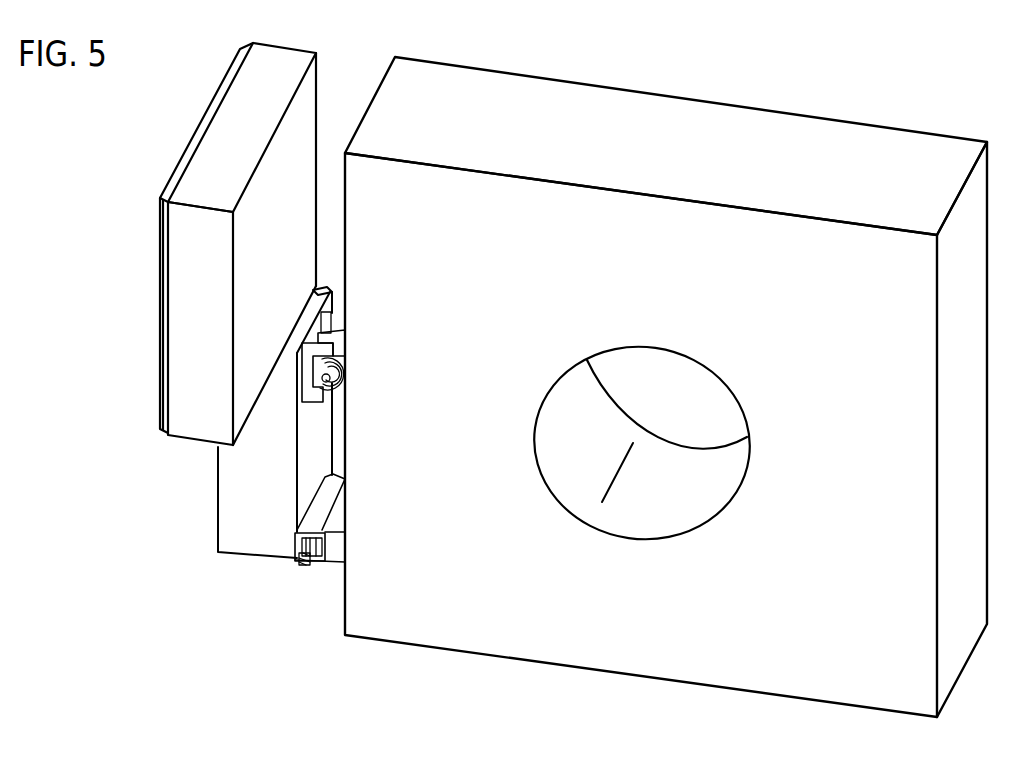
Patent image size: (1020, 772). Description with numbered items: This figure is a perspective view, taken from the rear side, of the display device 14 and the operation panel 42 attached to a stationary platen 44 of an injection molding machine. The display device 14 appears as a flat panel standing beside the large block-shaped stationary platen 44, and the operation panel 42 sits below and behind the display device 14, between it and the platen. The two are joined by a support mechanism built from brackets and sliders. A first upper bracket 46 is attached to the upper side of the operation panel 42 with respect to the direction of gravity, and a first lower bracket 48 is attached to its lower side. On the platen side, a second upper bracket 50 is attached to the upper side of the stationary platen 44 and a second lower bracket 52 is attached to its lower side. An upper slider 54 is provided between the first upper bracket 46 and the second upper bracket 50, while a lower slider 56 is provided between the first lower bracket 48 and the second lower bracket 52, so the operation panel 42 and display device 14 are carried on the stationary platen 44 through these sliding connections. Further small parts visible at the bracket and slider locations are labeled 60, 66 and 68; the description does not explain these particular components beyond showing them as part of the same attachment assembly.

The display device 14 is at (180, 278).
The operation panel 42 is at (232, 479).
The stationary platen 44 is at (750, 120).
The first upper bracket 46 is at (304, 392).
The first lower bracket 48 is at (304, 566).
The second upper bracket 50 is at (335, 342).
The second lower bracket 52 is at (338, 545).
The upper slider 54 is at (352, 373).
The lower slider 56 is at (313, 572).
The shaft 60 is at (329, 383).
The fastening member 66 is at (300, 548).
The support member 68 is at (335, 490).